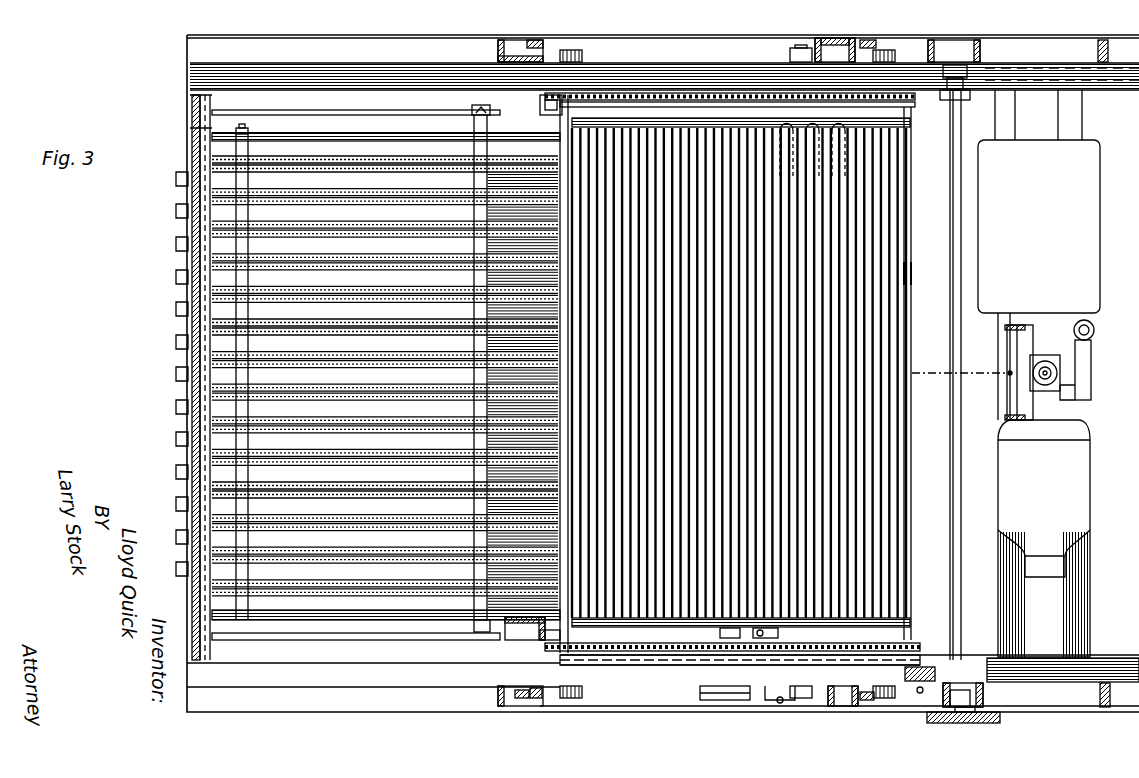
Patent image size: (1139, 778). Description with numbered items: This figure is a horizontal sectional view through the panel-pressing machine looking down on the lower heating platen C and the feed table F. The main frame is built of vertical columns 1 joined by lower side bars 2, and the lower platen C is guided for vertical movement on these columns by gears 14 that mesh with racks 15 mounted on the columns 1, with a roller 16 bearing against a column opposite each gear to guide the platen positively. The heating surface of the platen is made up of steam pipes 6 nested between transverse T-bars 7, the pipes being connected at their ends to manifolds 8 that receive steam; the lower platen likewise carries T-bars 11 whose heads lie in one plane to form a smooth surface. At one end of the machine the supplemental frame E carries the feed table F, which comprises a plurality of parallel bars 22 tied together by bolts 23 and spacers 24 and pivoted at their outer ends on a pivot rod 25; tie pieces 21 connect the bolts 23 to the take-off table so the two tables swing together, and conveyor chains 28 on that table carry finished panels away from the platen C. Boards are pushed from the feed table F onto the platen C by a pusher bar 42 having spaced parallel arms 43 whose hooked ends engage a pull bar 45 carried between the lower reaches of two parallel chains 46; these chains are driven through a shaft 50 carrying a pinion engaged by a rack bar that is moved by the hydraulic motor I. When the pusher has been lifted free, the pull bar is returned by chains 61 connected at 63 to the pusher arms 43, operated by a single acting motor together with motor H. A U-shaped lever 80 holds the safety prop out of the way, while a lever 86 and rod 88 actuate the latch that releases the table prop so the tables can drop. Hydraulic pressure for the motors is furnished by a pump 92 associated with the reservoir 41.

The vertical side posts or columns 1 is at (504, 62).
The lower side bars 2 is at (1012, 70).
The steam pipes 6 is at (822, 132).
The T-bars 7 is at (848, 132).
The manifolds 8 is at (738, 118).
The T-bars 11 is at (905, 272).
The gears 14 is at (577, 50).
The racks 15 is at (870, 40).
The roller 16 is at (800, 48).
The tie pieces 21 is at (485, 105).
The bars 22 is at (300, 133).
The bolts 23 is at (243, 124).
The spacers 24 is at (200, 230).
The pivot rod 25 is at (192, 128).
The conveyor chains 28 is at (403, 190).
The reservoir 41 is at (975, 182).
The pusher bar 42 is at (195, 272).
The pusher arms 43 is at (432, 110).
The pull bar 45 is at (563, 140).
The chains 46 is at (630, 102).
The shaft 50 is at (965, 724).
The chains 61 is at (530, 40).
The connection to pusher arm 63 is at (560, 143).
The U-shaped lever 80 is at (1020, 398).
The lever 86 is at (780, 700).
The rod 88 is at (735, 702).
The pump 92 is at (1016, 490).
The lower heating platen C is at (660, 118).
The supplemental frame E is at (438, 62).
The feed table F is at (342, 134).
The hydraulic motor H is at (552, 45).
The hydraulic motor I is at (680, 658).